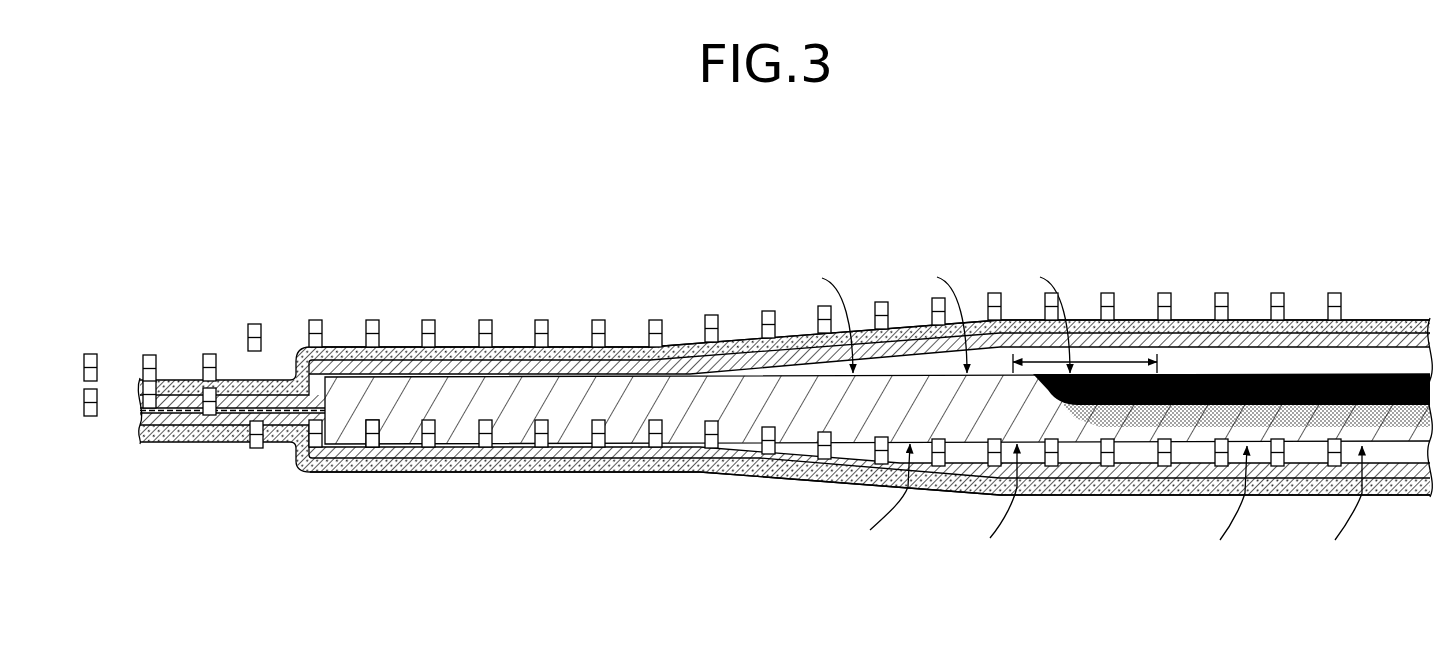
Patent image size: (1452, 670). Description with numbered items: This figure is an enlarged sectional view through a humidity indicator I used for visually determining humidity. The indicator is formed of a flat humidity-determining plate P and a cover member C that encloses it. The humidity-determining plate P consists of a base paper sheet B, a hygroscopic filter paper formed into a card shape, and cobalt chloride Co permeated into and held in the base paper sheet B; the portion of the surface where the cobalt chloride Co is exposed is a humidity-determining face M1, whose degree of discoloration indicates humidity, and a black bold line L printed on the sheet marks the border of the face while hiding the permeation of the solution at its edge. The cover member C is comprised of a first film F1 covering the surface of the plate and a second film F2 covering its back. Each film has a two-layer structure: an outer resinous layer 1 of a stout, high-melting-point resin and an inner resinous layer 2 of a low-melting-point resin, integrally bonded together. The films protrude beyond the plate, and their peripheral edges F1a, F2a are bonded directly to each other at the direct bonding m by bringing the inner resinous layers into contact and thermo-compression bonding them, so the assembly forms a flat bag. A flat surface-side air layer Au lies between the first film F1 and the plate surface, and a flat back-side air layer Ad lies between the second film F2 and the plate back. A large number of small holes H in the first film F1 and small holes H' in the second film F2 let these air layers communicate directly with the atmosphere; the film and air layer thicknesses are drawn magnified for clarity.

The outer resinous layer 1 is at (600, 320).
The inner resinous layer 2 is at (545, 350).
The base paper sheet B is at (650, 370).
The first film F1 is at (768, 338).
The second film F2 is at (717, 474).
The peripheral edge of the first film F1a is at (204, 378).
The peripheral edge of the second film F2a is at (212, 444).
The direct bonding m is at (258, 412).
The humidity-determining face M1 is at (1315, 373).
The cobalt chloride Co is at (1302, 373).
The surface-side air layer Au is at (1418, 373).
The black bold line L is at (1106, 360).
The humidity indicator I is at (908, 308).
The back-side air layer Ad is at (1277, 493).
The cover member C is at (1393, 497).
The small holes H is at (712, 327).
The small holes H' is at (795, 501).
The humidity-determining plate P is at (367, 450).